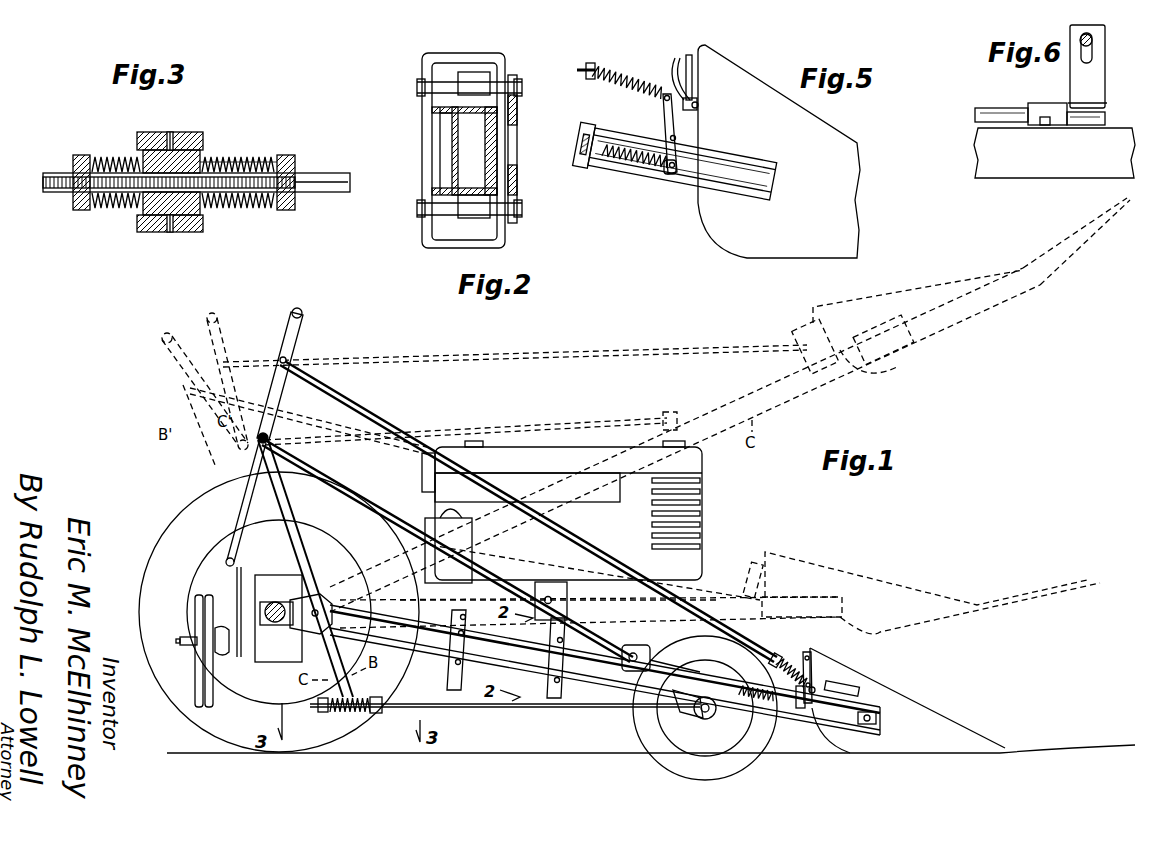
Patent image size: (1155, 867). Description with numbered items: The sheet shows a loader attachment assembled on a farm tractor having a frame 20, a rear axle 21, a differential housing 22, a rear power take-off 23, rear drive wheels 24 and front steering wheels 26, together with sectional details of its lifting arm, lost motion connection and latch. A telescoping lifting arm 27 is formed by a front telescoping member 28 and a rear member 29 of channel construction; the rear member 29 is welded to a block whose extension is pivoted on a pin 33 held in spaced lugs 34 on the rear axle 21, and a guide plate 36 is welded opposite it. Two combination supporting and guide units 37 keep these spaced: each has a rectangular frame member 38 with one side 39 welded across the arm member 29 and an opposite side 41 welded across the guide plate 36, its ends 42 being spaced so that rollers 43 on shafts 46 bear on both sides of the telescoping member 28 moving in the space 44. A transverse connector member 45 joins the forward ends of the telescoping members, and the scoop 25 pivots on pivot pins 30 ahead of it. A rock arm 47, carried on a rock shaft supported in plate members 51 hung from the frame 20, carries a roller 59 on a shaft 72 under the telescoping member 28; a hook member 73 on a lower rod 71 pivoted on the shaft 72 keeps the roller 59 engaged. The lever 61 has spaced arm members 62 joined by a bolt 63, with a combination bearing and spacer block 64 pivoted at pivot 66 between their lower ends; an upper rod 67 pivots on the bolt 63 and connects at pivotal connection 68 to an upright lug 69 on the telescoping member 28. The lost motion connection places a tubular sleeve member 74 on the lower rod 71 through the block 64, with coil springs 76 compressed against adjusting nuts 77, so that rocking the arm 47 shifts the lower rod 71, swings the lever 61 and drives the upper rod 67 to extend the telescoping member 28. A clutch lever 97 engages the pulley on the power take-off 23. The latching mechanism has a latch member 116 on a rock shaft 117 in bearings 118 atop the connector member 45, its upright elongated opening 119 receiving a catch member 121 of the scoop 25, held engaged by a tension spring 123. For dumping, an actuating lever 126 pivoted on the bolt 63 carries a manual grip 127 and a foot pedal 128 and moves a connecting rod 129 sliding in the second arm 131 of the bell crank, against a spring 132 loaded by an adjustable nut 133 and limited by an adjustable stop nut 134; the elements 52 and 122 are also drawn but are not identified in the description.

In FIG. 1, the frame 20 is at (352, 572).
In FIG. 1, the rear axle 21 is at (277, 623).
In FIG. 1, the differential housing 22 is at (248, 645).
In FIG. 1, the rear power take-off 23 is at (184, 646).
In FIG. 1, the rear drive wheels 24 is at (190, 506).
In FIG. 5, the scoop 25 is at (808, 128).
In FIG. 1, the scoop 25 is at (940, 720).
In FIG. 1, the front steering wheels 26 is at (742, 725).
In FIG. 1, the telescoping lifting arm 27 is at (602, 698).
In FIG. 1, the front telescoping member 28 is at (805, 708).
In FIG. 2, the rear member 29 is at (452, 150).
In FIG. 1, the pivot pins 30 is at (868, 732).
In FIG. 1, the pin 33 is at (316, 604).
In FIG. 1, the spaced lugs 34 is at (305, 628).
In FIG. 2, the guide plate 36 is at (492, 175).
In FIG. 2, the combination supporting and guide unit 37 is at (512, 56).
In FIG. 1, the combination supporting and guide unit 37 is at (457, 690).
In FIG. 2, the rectangular frame member 38 is at (428, 60).
In FIG. 2, the side 39 is at (425, 150).
In FIG. 2, the opposite side 41 is at (497, 146).
In FIG. 2, the ends 42 is at (466, 53).
In FIG. 2, the rollers 43 is at (480, 80).
In FIG. 2, the space 44 is at (466, 151).
In FIG. 6, the transverse connector member 45 is at (1112, 135).
In FIG. 2, the shafts 46 is at (438, 82).
In FIG. 1, the rock arm 47 is at (675, 700).
In FIG. 1, the plate members 51 is at (545, 585).
In FIG. 1, the pivot pin 52 is at (551, 597).
In FIG. 1, the rollers 59 is at (712, 716).
In FIG. 1, the lever 61 is at (304, 540).
In FIG. 3, the arm members 62 is at (190, 132).
In FIG. 1, the bolt 63 is at (268, 436).
In FIG. 3, the combination bearing and spacer block 64 is at (199, 158).
In FIG. 1, the combination bearing and spacer block 64 is at (350, 712).
In FIG. 3, the pivot 66 is at (170, 132).
In FIG. 1, the upper rod 67 is at (350, 484).
In FIG. 1, the pivotal connection 68 is at (652, 655).
In FIG. 1, the upright lug 69 is at (650, 665).
In FIG. 3, the lower rod 71 is at (330, 180).
In FIG. 1, the lower rod 71 is at (480, 708).
In FIG. 1, the shaft 72 is at (703, 722).
In FIG. 1, the hook member 73 is at (700, 700).
In FIG. 3, the tubular sleeve member 74 is at (262, 158).
In FIG. 3, the coil springs 76 is at (103, 156).
In FIG. 3, the adjusting nuts 77 is at (82, 210).
In FIG. 1, the clutch lever 97 is at (236, 578).
In FIG. 5, the latch member 116 is at (674, 62).
In FIG. 6, the latch member 116 is at (1105, 73).
In FIG. 6, the rock shaft 117 is at (995, 108).
In FIG. 1, the rock shaft 117 is at (858, 690).
In FIG. 6, the bearings 118 is at (1042, 103).
In FIG. 6, the upright elongated opening 119 is at (1092, 53).
In FIG. 5, the catch member 121 is at (689, 55).
In FIG. 6, the catch member 121 is at (1092, 38).
In FIG. 5, the bracket 122 is at (674, 172).
In FIG. 1, the bracket 122 is at (805, 703).
In FIG. 5, the tension spring 123 is at (675, 168).
In FIG. 1, the tension spring 123 is at (770, 706).
In FIG. 1, the actuating lever 126 is at (291, 343).
In FIG. 1, the manual grip 127 is at (303, 312).
In FIG. 1, the foot pedal 128 is at (224, 556).
In FIG. 5, the connecting rod 129 is at (590, 65).
In FIG. 1, the connecting rod 129 is at (380, 416).
In FIG. 5, the second arm 131 is at (676, 125).
In FIG. 1, the second arm 131 is at (812, 672).
In FIG. 5, the spring 132 is at (624, 75).
In FIG. 1, the spring 132 is at (792, 668).
In FIG. 5, the adjustable nut 133 is at (590, 80).
In FIG. 1, the adjustable nut 133 is at (775, 656).
In FIG. 5, the adjustable stop nut 134 is at (698, 104).
In FIG. 1, the adjustable stop nut 134 is at (815, 686).